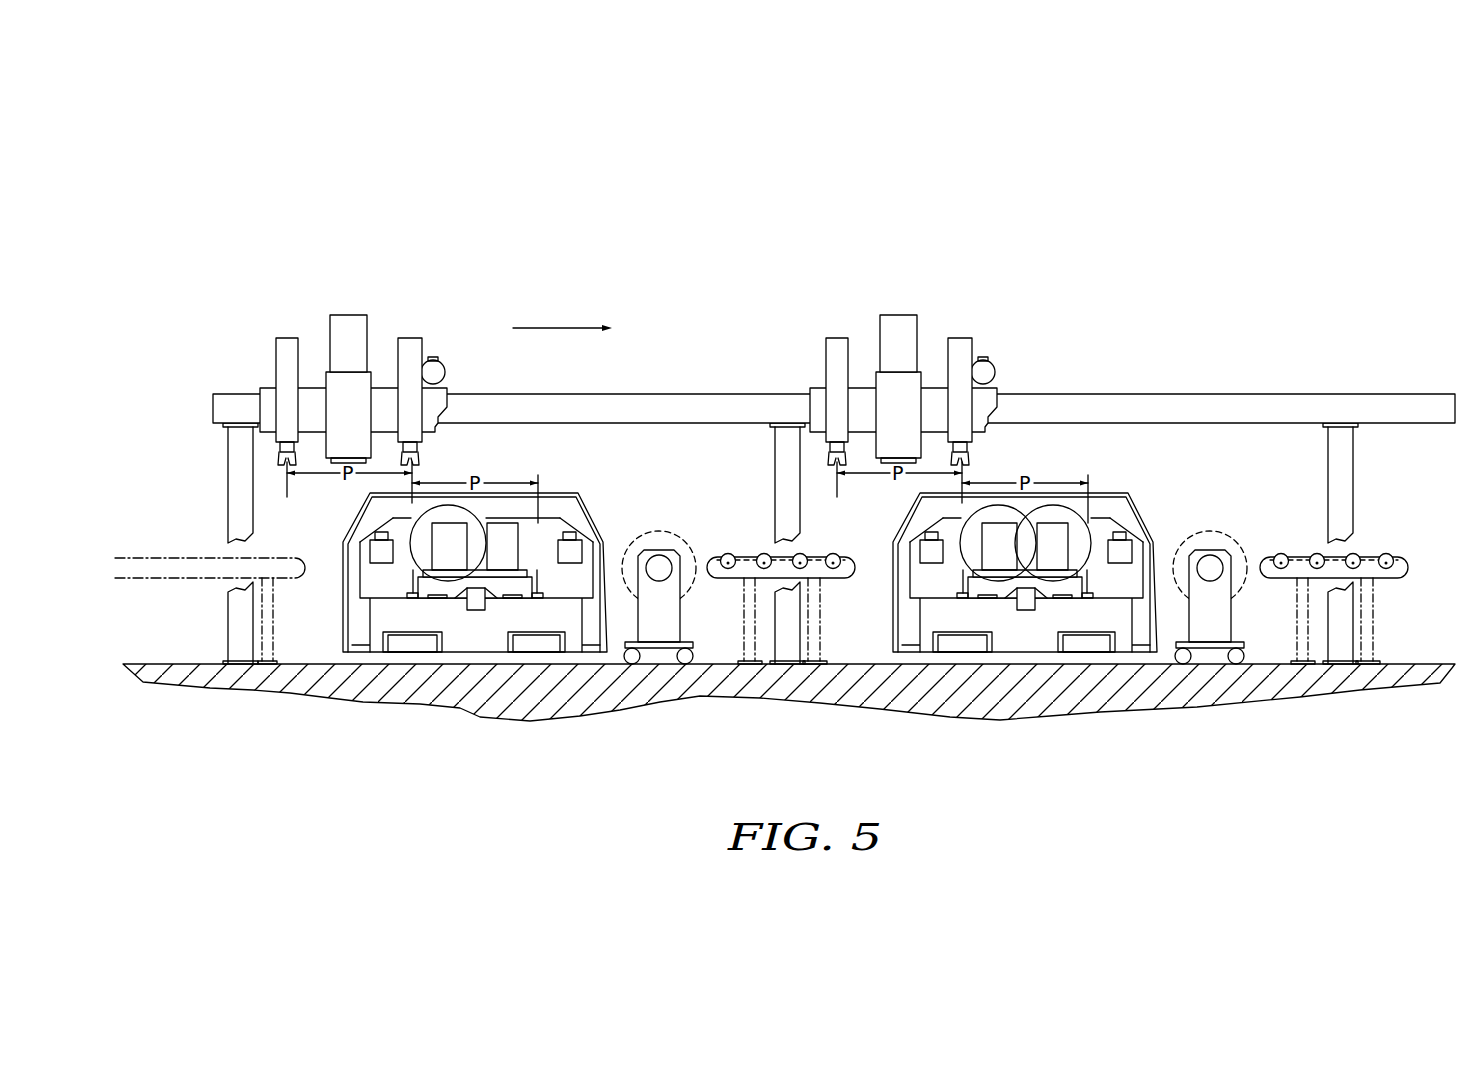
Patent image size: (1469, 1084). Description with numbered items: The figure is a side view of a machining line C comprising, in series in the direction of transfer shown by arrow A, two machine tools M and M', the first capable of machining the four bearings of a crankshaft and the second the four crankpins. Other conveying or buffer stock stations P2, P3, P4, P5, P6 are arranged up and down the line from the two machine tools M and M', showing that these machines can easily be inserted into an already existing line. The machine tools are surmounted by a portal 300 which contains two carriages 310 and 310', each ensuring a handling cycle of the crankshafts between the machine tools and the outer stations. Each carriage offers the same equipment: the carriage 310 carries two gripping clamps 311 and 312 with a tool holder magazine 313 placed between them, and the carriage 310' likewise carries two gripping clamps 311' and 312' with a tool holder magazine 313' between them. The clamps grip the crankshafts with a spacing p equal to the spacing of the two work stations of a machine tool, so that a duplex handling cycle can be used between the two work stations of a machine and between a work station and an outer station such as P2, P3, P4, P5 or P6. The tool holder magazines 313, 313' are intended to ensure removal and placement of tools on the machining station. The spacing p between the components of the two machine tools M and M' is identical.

The portal 300 is at (1124, 386).
The moving carriage 310 is at (332, 388).
The gripping clamp 311 is at (276, 377).
The gripping clamp 312 is at (423, 377).
The tool holder magazine 313 is at (354, 368).
The carriage 310' is at (932, 386).
The gripping clamp 311' is at (800, 388).
The gripping clamp 312' is at (955, 375).
The tool holder magazine 313' is at (866, 369).
The machine tool M is at (488, 542).
The machine tool M' is at (1045, 540).
The conveying or buffer stock station P2 is at (292, 541).
The conveying or buffer stock station P3 is at (658, 497).
The conveying or buffer stock station P4 is at (762, 534).
The conveying or buffer stock station P5 is at (1215, 497).
The conveying or buffer stock station P6 is at (1392, 534).
The direction of transfer A is at (562, 316).
The machining line C is at (663, 280).